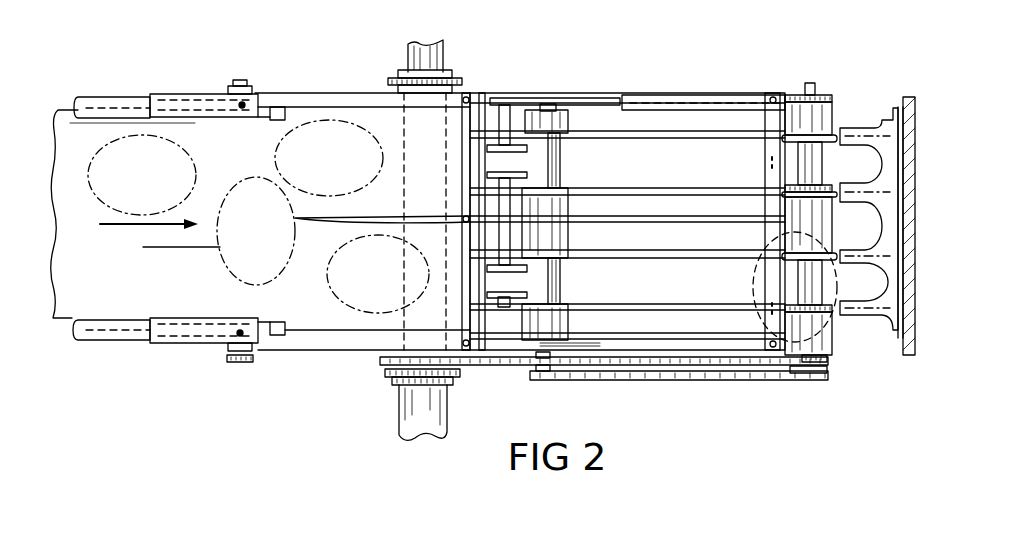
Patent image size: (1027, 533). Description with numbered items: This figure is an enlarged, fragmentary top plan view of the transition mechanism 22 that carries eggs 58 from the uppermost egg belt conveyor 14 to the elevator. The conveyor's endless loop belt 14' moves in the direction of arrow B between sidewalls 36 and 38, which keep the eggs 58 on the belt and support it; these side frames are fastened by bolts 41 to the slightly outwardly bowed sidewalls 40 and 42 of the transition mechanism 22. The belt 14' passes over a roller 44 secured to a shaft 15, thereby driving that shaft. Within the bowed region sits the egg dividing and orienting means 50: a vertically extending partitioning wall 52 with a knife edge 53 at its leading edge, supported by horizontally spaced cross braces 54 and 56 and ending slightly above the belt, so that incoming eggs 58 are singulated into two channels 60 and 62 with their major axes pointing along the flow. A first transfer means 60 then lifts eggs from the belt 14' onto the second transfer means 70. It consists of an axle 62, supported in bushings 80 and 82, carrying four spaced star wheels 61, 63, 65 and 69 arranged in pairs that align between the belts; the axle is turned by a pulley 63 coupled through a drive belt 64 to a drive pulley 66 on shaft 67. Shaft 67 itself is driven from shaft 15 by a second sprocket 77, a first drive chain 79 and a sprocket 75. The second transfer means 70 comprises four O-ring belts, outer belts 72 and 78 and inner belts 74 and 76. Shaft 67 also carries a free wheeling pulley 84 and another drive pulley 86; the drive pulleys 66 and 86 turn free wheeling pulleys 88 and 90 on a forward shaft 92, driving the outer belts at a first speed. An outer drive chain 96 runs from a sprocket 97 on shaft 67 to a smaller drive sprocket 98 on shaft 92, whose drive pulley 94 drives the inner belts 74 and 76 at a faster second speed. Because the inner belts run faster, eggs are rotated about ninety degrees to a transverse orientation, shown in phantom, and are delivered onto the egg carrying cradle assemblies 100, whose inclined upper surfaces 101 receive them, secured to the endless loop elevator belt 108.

The uppermost egg belt conveyor 14 is at (147, 382).
The endless loop belt 14' is at (129, 282).
The shaft 15 is at (423, 438).
The transition mechanism 22 is at (580, 66).
The sidewall 36 is at (84, 345).
The sidewall 38 is at (103, 104).
The sidewall 40 is at (305, 351).
The bolts 41 is at (240, 80).
The sidewall 42 is at (320, 93).
The roller 44 is at (366, 348).
The egg dividing and orienting means 50 is at (612, 233).
The partitioning wall 52 is at (598, 220).
The knife edge 53 is at (297, 217).
The cross brace 54 is at (462, 134).
The cross brace 56 is at (765, 163).
The eggs 58 is at (150, 181).
The first transfer means 60 is at (468, 62).
The star wheel 61 is at (490, 300).
The axle 62 is at (262, 145).
The pulley 63 is at (507, 98).
The drive belt 64 is at (607, 96).
The star wheel 65 is at (490, 175).
The drive pulley 66 is at (833, 113).
The shaft 67 is at (822, 163).
The star wheel 69 is at (489, 145).
The second transfer means 70 is at (665, 62).
The outer belt 72 is at (680, 304).
The inner belt 74 is at (676, 260).
The sprocket 75 is at (827, 365).
The inner belt 76 is at (688, 192).
The second sprocket 77 is at (460, 370).
The outer belt 78 is at (680, 138).
The first drive chain 79 is at (618, 352).
The bushing 80 is at (560, 157).
The bushing 82 is at (560, 280).
The free wheeling pulley 84 is at (823, 218).
The drive pulley 86 is at (827, 333).
The free wheeling pulley 88 is at (568, 118).
The free wheeling pulley 90 is at (568, 327).
The forward shaft 92 is at (547, 104).
The drive pulley 94 is at (570, 207).
The outer drive chain 96 is at (680, 381).
The sprocket 97 is at (813, 380).
The smaller drive sprocket 98 is at (548, 380).
The egg carrying cradle assemblies 100 is at (890, 348).
The upper surface 101 is at (860, 132).
The endless loop elevator belt 108 is at (910, 96).
The arrow B is at (135, 228).